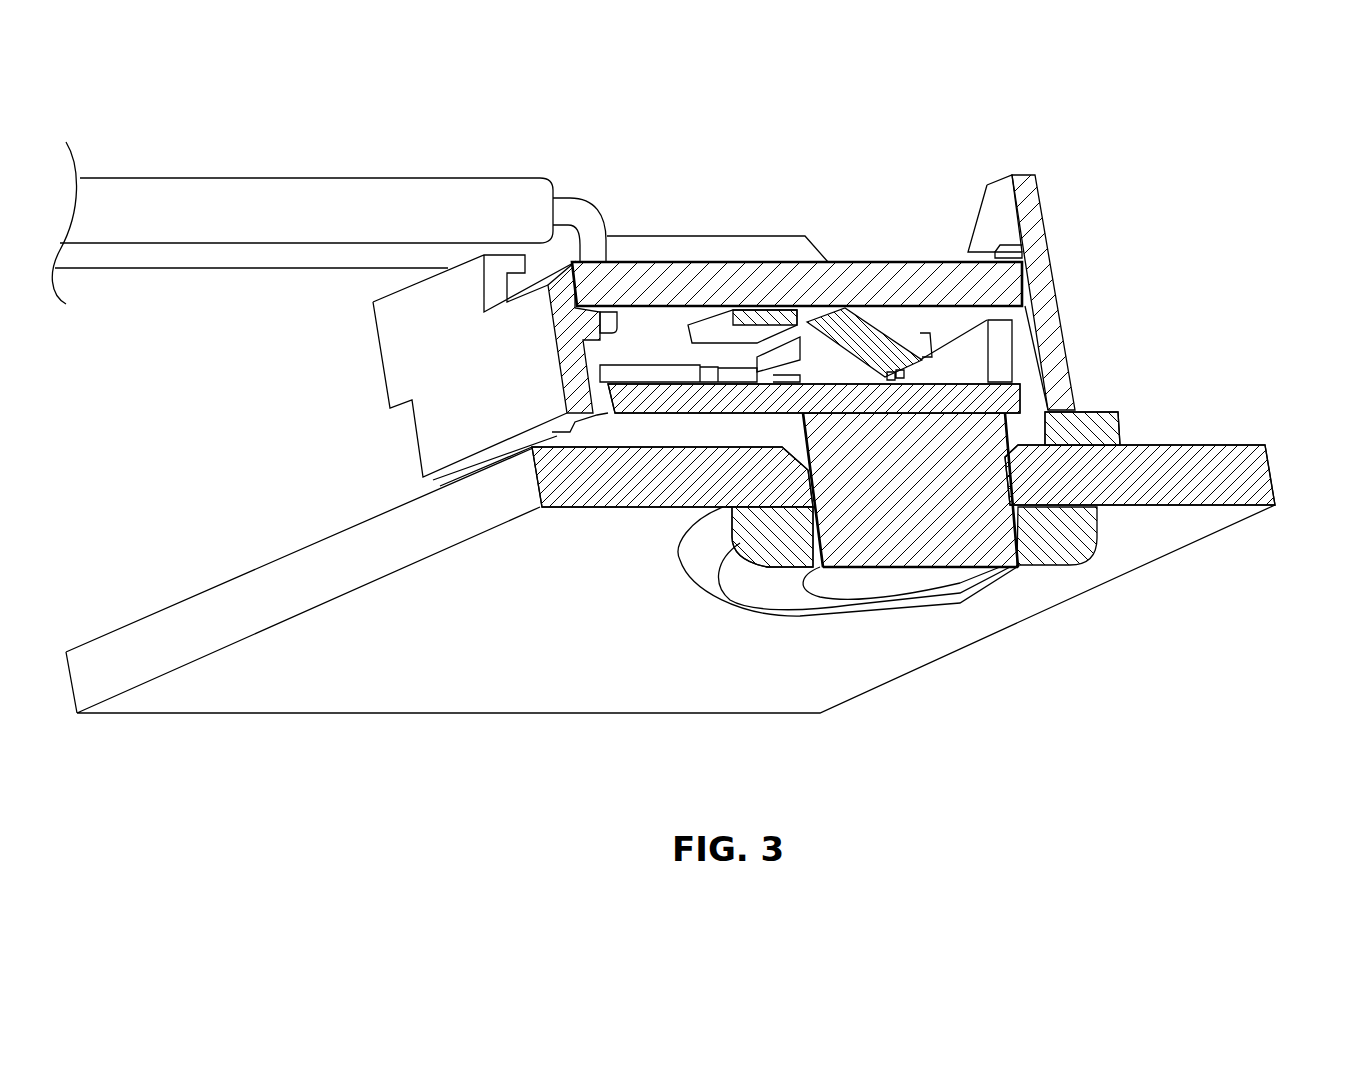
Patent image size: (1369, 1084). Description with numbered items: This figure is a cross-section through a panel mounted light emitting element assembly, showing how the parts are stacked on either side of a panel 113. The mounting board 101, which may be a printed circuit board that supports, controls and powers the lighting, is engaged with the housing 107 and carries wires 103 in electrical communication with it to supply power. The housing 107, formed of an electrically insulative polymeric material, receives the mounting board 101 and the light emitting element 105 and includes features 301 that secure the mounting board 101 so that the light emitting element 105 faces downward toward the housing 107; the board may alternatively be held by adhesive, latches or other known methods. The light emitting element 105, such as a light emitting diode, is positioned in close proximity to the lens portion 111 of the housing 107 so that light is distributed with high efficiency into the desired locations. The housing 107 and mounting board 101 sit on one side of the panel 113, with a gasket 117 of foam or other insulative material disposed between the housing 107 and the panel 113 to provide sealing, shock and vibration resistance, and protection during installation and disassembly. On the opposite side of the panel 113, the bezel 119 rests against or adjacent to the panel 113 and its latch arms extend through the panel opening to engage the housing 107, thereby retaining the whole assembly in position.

The mounting board 101 is at (880, 275).
The wires 103 is at (432, 195).
The light emitting element 105 is at (882, 328).
The housing 107 is at (1033, 226).
The lens portion 111 is at (970, 550).
The panel 113 is at (1262, 475).
The gasket 117 is at (1112, 433).
The bezel 119 is at (1083, 533).
The features 301 is at (1022, 252).